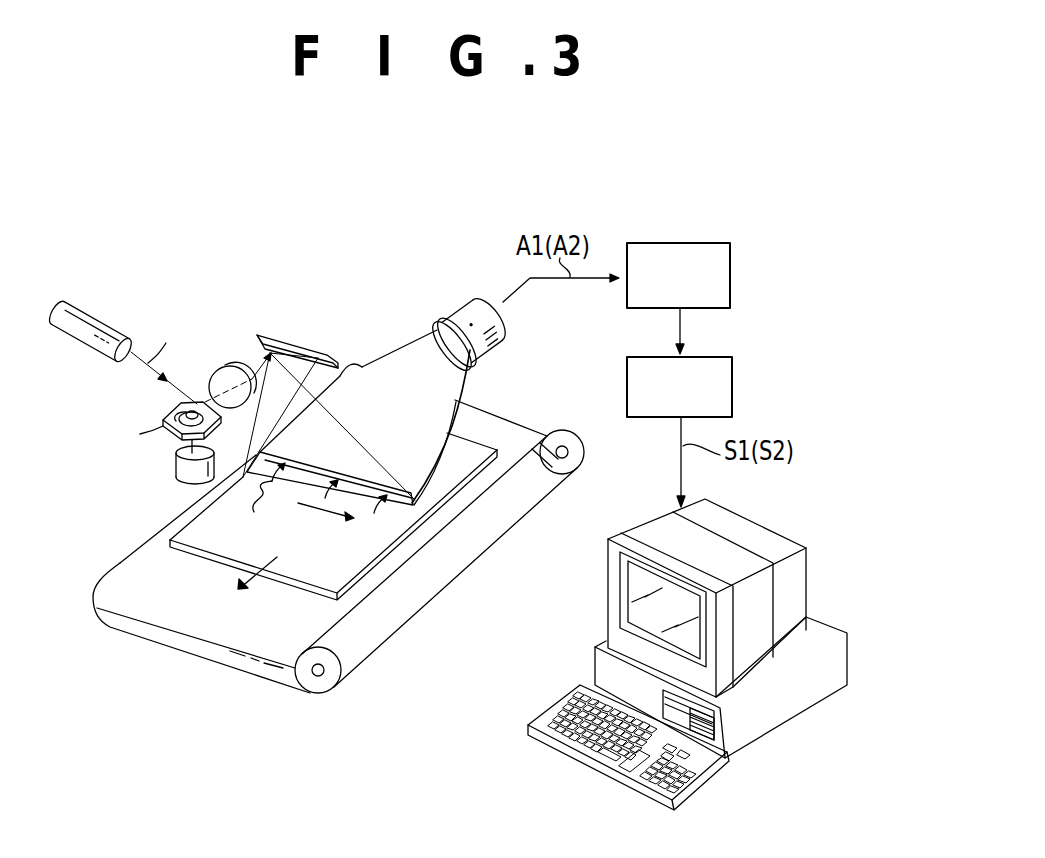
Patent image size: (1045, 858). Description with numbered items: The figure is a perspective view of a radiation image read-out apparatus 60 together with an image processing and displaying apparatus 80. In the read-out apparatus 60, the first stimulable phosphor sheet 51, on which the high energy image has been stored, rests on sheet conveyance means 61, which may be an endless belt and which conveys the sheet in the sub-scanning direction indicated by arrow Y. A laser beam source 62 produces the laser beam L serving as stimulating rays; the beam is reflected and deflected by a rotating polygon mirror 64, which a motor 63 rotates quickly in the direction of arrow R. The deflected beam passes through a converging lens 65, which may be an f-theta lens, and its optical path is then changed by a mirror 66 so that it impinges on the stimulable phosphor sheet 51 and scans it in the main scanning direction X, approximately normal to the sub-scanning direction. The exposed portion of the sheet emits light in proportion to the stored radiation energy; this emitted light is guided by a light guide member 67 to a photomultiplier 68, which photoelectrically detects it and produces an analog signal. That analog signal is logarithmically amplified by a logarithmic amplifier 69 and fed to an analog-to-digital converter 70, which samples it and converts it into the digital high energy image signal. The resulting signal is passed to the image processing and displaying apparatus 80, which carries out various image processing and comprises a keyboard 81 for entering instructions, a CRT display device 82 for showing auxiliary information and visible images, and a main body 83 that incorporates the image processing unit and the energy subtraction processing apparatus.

The radiation image read-out apparatus 60 is at (245, 238).
The sheet conveyance means 61 is at (333, 610).
The first stimulable phosphor sheet 51 is at (368, 552).
The laser beam source 62 is at (95, 318).
The motor 63 is at (176, 453).
The rotating polygon mirror 64 is at (164, 413).
The converging lens 65 is at (216, 367).
The mirror 66 is at (308, 344).
The light guide member 67 is at (403, 373).
The photomultiplier 68 is at (462, 313).
The logarithmic amplifier 69 is at (730, 292).
The analog-to-digital converter 70 is at (732, 384).
The image processing and displaying apparatus 80 is at (813, 520).
The keyboard 81 is at (577, 718).
The CRT display device 82 is at (626, 583).
The main body 83 is at (797, 703).